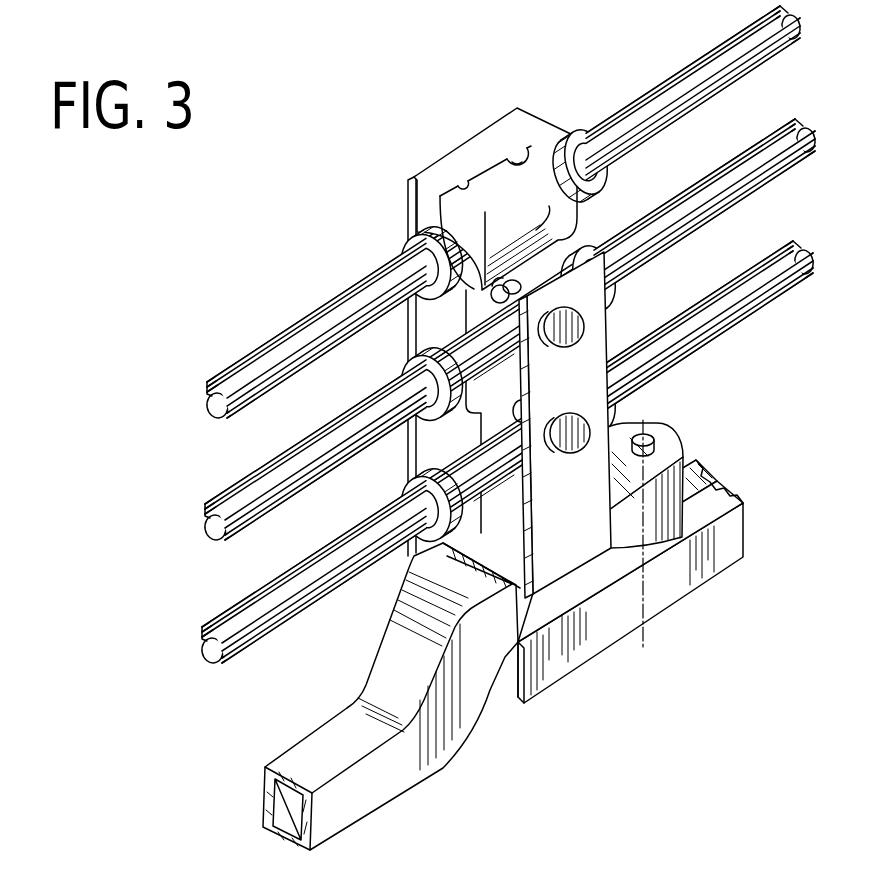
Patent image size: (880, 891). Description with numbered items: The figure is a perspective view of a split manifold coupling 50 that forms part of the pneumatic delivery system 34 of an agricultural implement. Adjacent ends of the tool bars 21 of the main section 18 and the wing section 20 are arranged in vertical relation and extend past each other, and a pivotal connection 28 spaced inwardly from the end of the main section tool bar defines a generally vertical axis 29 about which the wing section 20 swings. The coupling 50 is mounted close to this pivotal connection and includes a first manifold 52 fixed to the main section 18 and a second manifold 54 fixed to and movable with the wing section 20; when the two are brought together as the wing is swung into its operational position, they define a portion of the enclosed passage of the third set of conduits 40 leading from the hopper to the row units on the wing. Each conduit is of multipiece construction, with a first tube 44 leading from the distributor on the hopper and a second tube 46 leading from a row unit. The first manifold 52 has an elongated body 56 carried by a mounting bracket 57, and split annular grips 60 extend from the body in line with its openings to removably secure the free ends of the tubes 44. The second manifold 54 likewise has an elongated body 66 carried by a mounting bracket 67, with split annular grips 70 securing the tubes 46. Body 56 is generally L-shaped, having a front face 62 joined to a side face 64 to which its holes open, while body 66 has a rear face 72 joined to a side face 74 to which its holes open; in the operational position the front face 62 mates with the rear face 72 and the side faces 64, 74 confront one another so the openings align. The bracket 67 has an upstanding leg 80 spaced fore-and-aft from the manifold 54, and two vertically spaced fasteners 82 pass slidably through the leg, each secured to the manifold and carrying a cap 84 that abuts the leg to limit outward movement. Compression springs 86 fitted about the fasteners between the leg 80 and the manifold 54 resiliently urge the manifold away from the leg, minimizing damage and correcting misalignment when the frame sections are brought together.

The main section 18 is at (713, 602).
The wing section 20 is at (379, 825).
The tool bar 21 is at (280, 763).
The pivotal connection 28 is at (666, 446).
The vertical axis 29 is at (644, 646).
The pneumatic delivery system 34 is at (515, 334).
The third set of conduits 40 is at (263, 334).
The first tube 44 is at (772, 142).
The second tube 46 is at (265, 382).
The split manifold coupling 50 is at (402, 329).
The first manifold 52 is at (548, 114).
The second manifold 54 is at (447, 317).
The elongated body 56 is at (481, 158).
The mounting bracket 57 is at (405, 180).
The split annular grip 60 is at (578, 130).
The front face 62 is at (460, 181).
The side face 64 is at (529, 150).
The elongated body 66 is at (502, 505).
The mounting bracket 67 is at (576, 579).
The split annular grip 70 is at (397, 250).
The rear face 72 is at (468, 190).
The side face 74 is at (548, 208).
The upstanding leg 80 is at (593, 336).
The fasteners 82 is at (538, 342).
The cap 84 is at (574, 412).
The compression springs 86 is at (514, 279).